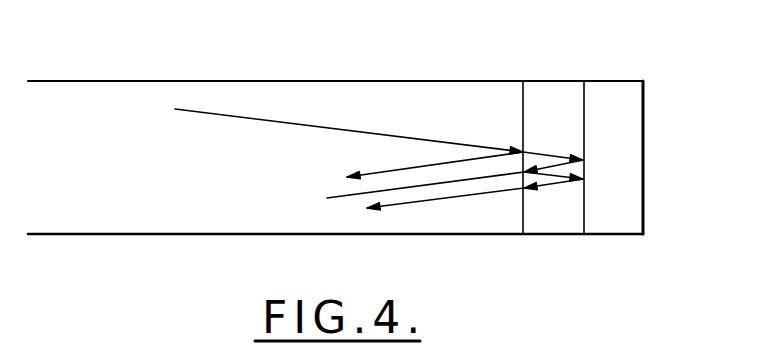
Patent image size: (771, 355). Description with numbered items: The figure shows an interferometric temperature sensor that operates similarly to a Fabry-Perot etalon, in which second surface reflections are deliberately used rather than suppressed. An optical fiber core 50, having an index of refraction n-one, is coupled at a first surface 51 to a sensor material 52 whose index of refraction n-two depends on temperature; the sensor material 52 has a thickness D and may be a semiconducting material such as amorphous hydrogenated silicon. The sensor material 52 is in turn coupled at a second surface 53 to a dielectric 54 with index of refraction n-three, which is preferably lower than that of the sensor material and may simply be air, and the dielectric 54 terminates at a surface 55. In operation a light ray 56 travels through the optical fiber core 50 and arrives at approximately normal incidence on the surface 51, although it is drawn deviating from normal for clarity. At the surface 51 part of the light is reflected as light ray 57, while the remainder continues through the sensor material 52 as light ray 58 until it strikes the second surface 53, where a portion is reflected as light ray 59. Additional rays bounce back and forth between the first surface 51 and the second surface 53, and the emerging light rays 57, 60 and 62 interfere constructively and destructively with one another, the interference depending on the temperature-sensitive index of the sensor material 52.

The optical fiber core 50 is at (255, 88).
The surface 51 is at (523, 80).
The sensor material 52 is at (555, 222).
The surface 53 is at (584, 80).
The dielectric 54 is at (612, 92).
The surface 55 is at (644, 131).
The light ray 56 is at (305, 100).
The light ray 57 is at (380, 172).
The light ray 58 is at (526, 151).
The light ray 59 is at (585, 176).
The light ray 60 is at (345, 194).
The light ray 62 is at (465, 197).